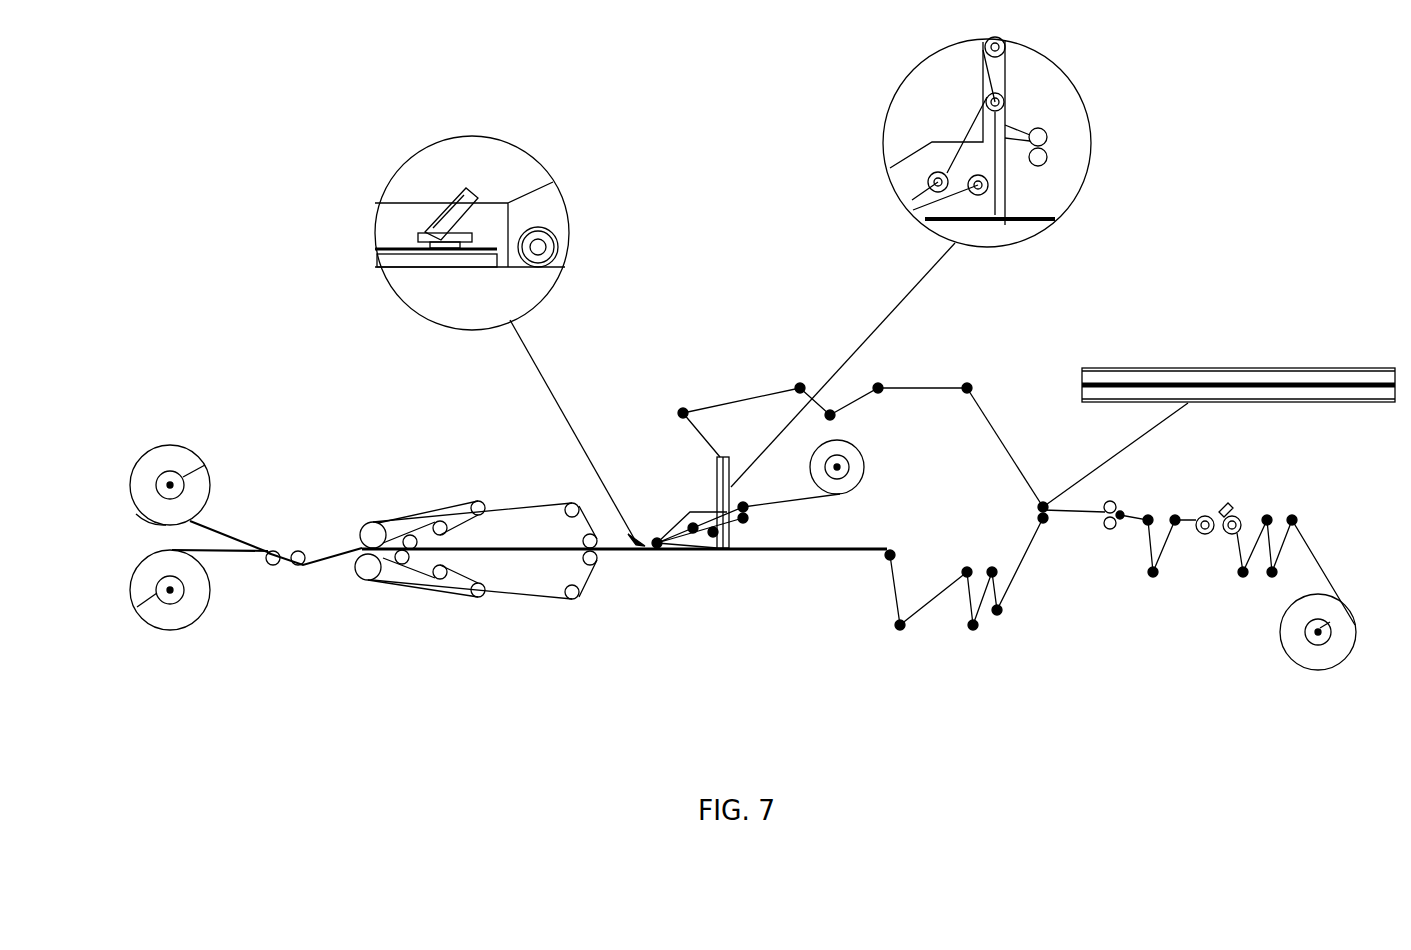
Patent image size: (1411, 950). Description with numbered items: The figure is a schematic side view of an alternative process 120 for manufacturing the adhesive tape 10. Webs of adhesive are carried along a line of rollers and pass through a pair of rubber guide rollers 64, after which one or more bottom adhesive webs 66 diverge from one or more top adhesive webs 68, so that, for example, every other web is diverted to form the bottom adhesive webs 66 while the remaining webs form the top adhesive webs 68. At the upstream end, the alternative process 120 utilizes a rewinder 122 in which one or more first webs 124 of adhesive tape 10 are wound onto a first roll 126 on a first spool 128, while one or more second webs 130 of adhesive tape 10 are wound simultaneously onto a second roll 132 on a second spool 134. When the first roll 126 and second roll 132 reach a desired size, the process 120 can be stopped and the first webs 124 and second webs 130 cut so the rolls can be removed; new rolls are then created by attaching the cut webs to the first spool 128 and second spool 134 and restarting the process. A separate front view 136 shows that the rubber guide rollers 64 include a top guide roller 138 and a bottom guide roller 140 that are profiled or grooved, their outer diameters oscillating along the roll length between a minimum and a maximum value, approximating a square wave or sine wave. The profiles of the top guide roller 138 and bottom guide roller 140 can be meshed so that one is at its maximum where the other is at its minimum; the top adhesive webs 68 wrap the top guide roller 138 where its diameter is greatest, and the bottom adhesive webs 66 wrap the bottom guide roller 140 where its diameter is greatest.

The adhesive tape 10 is at (327, 557).
The rubber guide rollers 64 is at (1021, 518).
The bottom adhesive webs 66 is at (1027, 570).
The top adhesive webs 68 is at (990, 418).
The alternative process 120 is at (363, 370).
The rewinder 122 is at (165, 435).
The first webs 124 is at (222, 554).
The first roll 126 is at (185, 625).
The first spool 128 is at (137, 607).
The second webs 130 is at (222, 540).
The second roll 132 is at (130, 501).
The second spool 134 is at (205, 465).
The front view 136 is at (1250, 356).
The top guide roller 138 is at (1125, 368).
The bottom guide roller 140 is at (1340, 402).